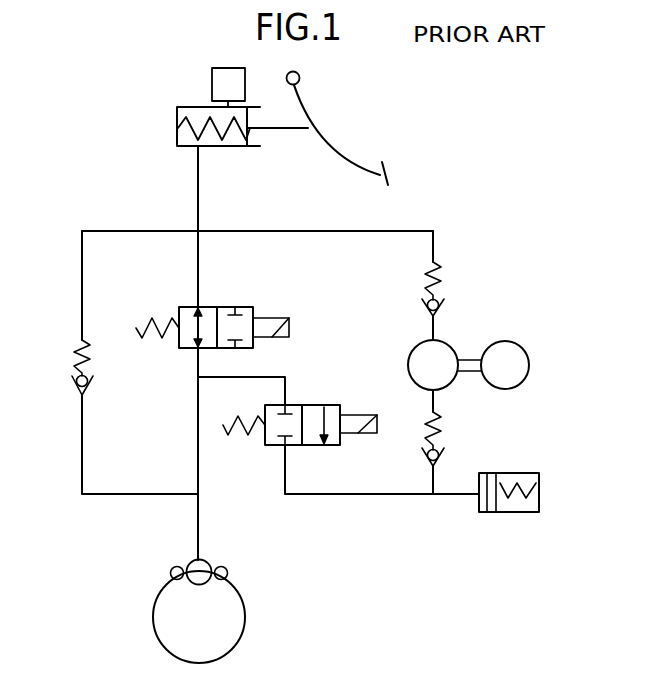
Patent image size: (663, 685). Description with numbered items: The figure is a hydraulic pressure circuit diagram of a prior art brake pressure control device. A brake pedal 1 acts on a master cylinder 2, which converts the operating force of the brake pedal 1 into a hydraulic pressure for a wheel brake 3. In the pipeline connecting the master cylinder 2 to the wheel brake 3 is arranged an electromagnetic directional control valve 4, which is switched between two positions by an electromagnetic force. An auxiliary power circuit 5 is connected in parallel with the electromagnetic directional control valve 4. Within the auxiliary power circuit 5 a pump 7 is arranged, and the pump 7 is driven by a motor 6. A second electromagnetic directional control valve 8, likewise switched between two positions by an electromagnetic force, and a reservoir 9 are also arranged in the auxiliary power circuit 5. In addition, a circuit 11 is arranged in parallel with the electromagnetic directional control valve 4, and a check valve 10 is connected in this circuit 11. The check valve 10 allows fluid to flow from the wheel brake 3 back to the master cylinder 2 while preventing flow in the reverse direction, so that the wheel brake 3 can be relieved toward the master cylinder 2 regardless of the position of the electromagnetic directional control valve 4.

The brake pedal 1 is at (312, 132).
The master cylinder 2 is at (177, 130).
The wheel brake 3 is at (208, 560).
The electromagnetic directional control valve 4 is at (235, 307).
The auxiliary power circuit 5 is at (403, 231).
The motor 6 is at (513, 342).
The pump 7 is at (455, 347).
The electromagnetic directional control valve 8 is at (333, 405).
The reservoir 9 is at (525, 473).
The check valve 10 is at (80, 390).
The circuit 11 is at (82, 448).